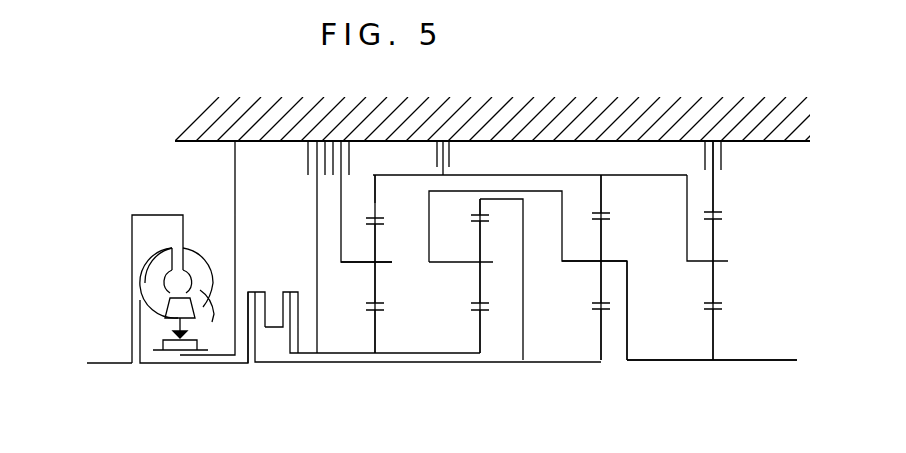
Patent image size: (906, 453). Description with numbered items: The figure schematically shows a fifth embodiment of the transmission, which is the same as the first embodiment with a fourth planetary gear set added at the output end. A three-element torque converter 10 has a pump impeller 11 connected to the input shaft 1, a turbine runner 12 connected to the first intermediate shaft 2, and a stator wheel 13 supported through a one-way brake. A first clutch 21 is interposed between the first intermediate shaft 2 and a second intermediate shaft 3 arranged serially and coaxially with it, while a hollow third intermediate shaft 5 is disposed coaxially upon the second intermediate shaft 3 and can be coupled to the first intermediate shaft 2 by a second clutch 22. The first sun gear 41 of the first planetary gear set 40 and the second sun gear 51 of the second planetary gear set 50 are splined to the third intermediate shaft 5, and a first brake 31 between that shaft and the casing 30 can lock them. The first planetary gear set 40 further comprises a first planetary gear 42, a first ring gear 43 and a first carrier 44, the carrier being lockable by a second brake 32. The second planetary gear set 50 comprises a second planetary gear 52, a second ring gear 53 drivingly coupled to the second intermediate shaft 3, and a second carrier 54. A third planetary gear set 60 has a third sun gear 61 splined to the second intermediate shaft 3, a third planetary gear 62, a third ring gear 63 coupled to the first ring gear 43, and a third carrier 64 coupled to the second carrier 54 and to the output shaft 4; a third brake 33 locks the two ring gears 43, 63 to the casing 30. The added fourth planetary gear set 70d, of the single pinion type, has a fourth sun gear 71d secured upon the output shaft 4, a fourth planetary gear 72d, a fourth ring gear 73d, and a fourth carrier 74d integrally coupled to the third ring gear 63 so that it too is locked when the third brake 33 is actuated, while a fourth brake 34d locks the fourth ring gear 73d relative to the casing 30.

The input shaft 1 is at (102, 363).
The first intermediate shaft 2 is at (171, 363).
The second intermediate shaft 3 is at (276, 363).
The output shaft 4 is at (762, 361).
The third intermediate shaft 5 is at (338, 354).
The torque converter 10 is at (212, 267).
The pump impeller 11 is at (218, 311).
The turbine runner 12 is at (157, 272).
The stator wheel 13 is at (170, 308).
The first clutch 21 is at (252, 291).
The second clutch 22 is at (289, 291).
The casing 30 is at (426, 88).
The first brake 31 is at (316, 138).
The second brake 32 is at (345, 138).
The third brake 33 is at (444, 138).
The fourth brake 34d is at (713, 138).
The first planetary gear set 40 is at (371, 325).
The first sun gear 41 is at (378, 322).
The first planetary gear 42 is at (378, 287).
The first ring gear 43 is at (375, 186).
The first carrier 44 is at (352, 264).
The second planetary gear set 50 is at (477, 325).
The second sun gear 51 is at (478, 322).
The second planetary gear 52 is at (478, 278).
The second ring gear 53 is at (480, 212).
The second carrier 54 is at (449, 264).
The third planetary gear set 60 is at (599, 326).
The third sun gear 61 is at (599, 332).
The third planetary gear 62 is at (599, 289).
The third ring gear 63 is at (604, 197).
The third carrier 64 is at (575, 262).
The fourth planetary gear set 70d is at (709, 321).
The fourth sun gear 71d is at (717, 333).
The fourth planetary gear 72d is at (716, 287).
The fourth ring gear 73d is at (716, 196).
The fourth carrier 74d is at (697, 264).